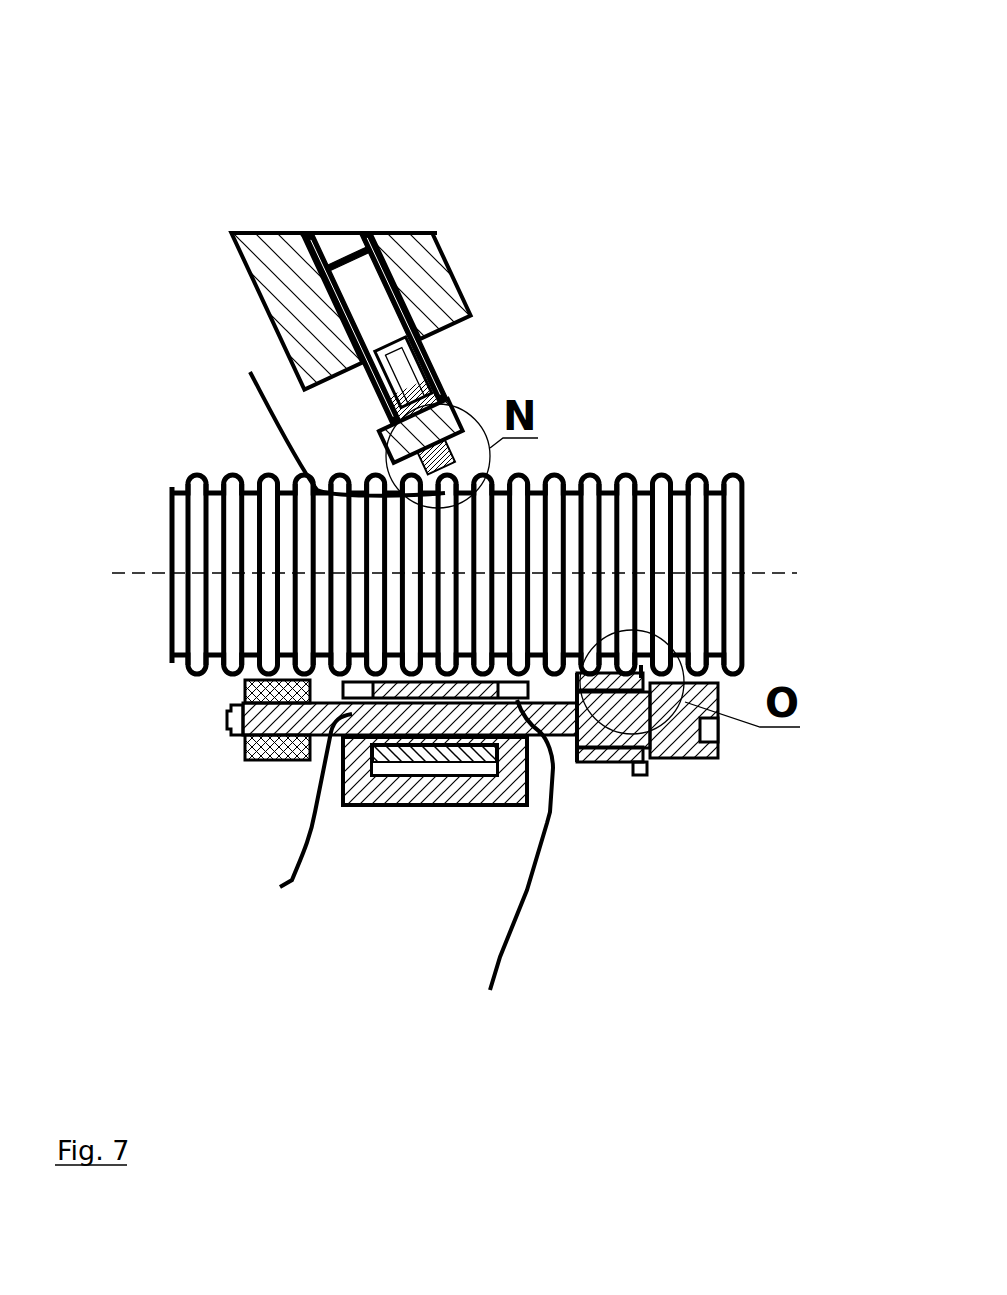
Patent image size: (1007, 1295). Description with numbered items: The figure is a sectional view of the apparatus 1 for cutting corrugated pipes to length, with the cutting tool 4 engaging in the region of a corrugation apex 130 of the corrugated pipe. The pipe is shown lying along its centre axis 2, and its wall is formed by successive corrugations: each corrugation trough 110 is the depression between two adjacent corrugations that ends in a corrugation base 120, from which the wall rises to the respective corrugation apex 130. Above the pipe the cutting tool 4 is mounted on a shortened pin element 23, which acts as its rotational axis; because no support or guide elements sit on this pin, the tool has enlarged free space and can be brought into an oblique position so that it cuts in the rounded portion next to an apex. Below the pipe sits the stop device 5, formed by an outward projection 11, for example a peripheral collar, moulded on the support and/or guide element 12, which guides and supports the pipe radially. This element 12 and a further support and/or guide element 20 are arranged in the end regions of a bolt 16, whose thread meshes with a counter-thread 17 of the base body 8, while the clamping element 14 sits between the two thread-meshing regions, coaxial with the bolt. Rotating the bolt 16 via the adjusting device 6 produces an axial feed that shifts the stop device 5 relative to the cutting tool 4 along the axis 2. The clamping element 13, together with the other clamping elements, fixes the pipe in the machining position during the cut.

The apparatus 1 is at (560, 223).
The axis 2 is at (507, 452).
The cutting tool 4 is at (331, 418).
The stop device 5 is at (658, 774).
The adjusting device 6 is at (725, 739).
The base body 8 is at (379, 555).
The projection 11 is at (639, 762).
The support and/or guide element 12 is at (607, 755).
The clamping element 13 is at (331, 418).
The clamping element 14 is at (408, 803).
The bolt 16 is at (577, 725).
The counter-thread 17 is at (409, 861).
The support and/or guide element 20 is at (245, 755).
The pin element 23 is at (447, 406).
The corrugation trough 110 is at (507, 452).
The corrugation base 120 is at (507, 452).
The corrugation apex 130 is at (553, 474).